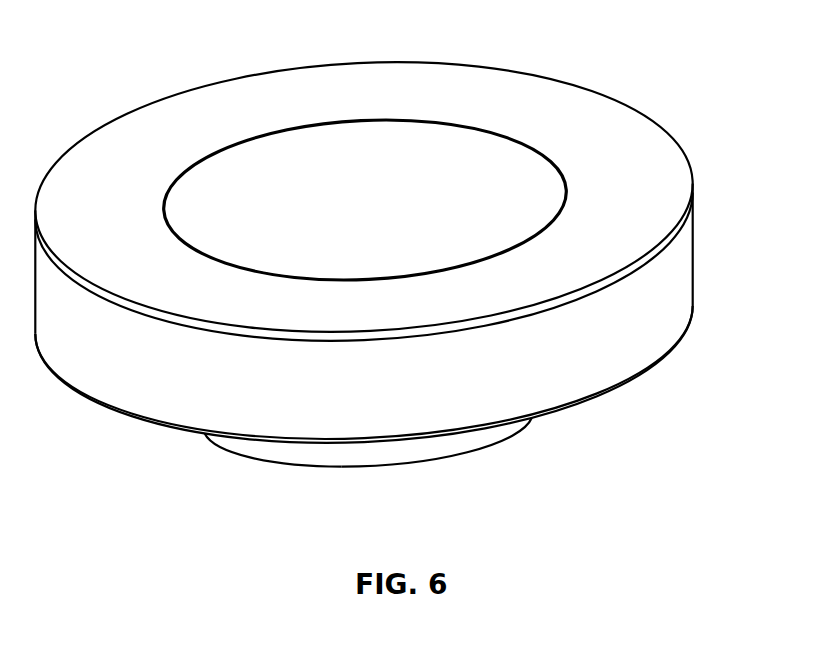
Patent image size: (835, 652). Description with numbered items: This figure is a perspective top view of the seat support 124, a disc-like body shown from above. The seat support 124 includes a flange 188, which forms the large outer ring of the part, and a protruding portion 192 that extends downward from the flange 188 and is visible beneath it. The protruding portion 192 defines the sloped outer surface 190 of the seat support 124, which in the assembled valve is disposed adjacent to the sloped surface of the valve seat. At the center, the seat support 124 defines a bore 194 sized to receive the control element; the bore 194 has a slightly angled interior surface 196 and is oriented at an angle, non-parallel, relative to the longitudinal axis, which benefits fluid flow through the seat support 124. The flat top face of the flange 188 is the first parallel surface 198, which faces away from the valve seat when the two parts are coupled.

The seat support 124 is at (585, 113).
The flange 188 is at (673, 268).
The sloped outer surface 190 is at (303, 452).
The protruding portion 192 is at (448, 445).
The bore 194 is at (300, 163).
The angled interior surface 196 is at (398, 157).
The first parallel surface 198 is at (80, 170).